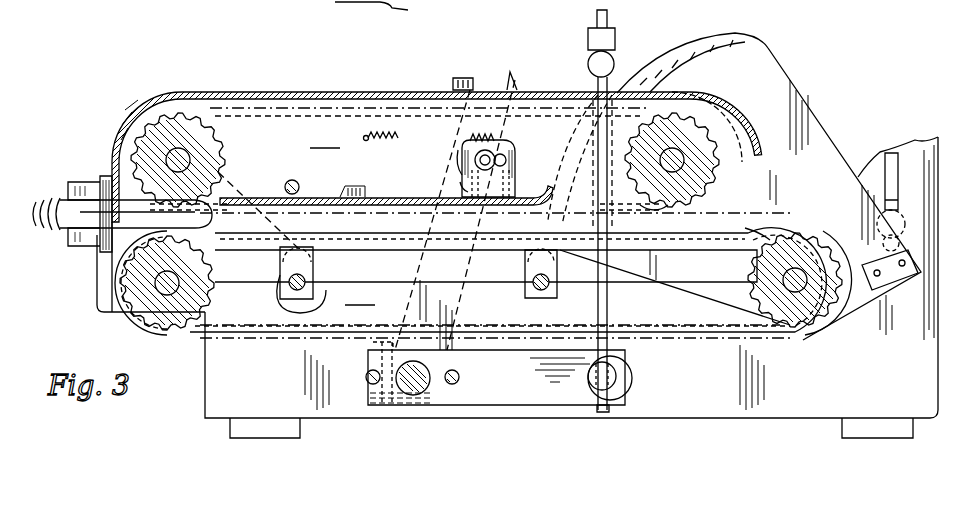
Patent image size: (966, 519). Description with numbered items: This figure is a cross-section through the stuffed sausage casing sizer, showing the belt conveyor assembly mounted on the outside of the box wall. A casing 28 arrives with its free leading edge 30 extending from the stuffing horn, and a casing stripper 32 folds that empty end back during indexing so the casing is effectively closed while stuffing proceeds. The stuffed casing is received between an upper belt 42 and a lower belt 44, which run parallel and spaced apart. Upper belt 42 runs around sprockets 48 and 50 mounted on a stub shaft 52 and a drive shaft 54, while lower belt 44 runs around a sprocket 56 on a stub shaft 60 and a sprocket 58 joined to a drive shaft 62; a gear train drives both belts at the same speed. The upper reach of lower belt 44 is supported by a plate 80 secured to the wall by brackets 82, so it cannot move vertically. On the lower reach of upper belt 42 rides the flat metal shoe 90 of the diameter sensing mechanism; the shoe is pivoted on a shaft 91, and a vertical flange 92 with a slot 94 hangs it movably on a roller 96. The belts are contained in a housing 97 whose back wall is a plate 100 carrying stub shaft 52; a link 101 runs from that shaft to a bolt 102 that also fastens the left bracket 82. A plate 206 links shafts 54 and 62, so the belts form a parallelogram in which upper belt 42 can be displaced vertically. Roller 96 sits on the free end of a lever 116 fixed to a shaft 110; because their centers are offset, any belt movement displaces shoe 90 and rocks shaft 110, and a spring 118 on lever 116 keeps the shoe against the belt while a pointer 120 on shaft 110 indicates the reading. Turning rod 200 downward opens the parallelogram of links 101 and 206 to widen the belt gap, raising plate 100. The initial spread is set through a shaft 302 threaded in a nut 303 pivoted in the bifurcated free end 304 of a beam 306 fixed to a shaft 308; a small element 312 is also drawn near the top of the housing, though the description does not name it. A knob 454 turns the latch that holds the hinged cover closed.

The casing 28 is at (58, 200).
The free leading edge 30 is at (157, 214).
The casing stripper 32 is at (98, 178).
The upper belt 42 is at (652, 208).
The lower belt 44 is at (748, 230).
The sprocket 48 is at (212, 158).
The sprocket 50 is at (714, 186).
The stub shaft 52 is at (165, 140).
The drive shaft 54 is at (700, 128).
The sprocket 56 is at (165, 332).
The sprocket 58 is at (755, 265).
The stub shaft 60 is at (145, 330).
The drive shaft 62 is at (812, 332).
The plate 80 is at (420, 250).
The brackets 82 is at (318, 262).
The shoe 90 is at (375, 205).
The shaft 91 is at (292, 180).
The vertical flange 92 is at (342, 195).
The slot 94 is at (462, 160).
The roller 96 is at (460, 172).
The housing 97 is at (240, 93).
The plate 100 is at (378, 300).
The link 101 is at (280, 290).
The bolt 102 is at (297, 305).
The shaft 110 is at (516, 158).
The lever 116 is at (508, 145).
The spring 118 is at (375, 138).
The pointer 120 is at (510, 78).
The rod 200 is at (893, 153).
The plate 206 is at (815, 118).
The shaft 302 is at (610, 302).
The nut 303 is at (625, 375).
The bifurcated free end 304 is at (632, 388).
The beam 306 is at (565, 352).
The shaft 308 is at (432, 380).
The stop block 312 is at (456, 84).
The knob 454 is at (389, 11).